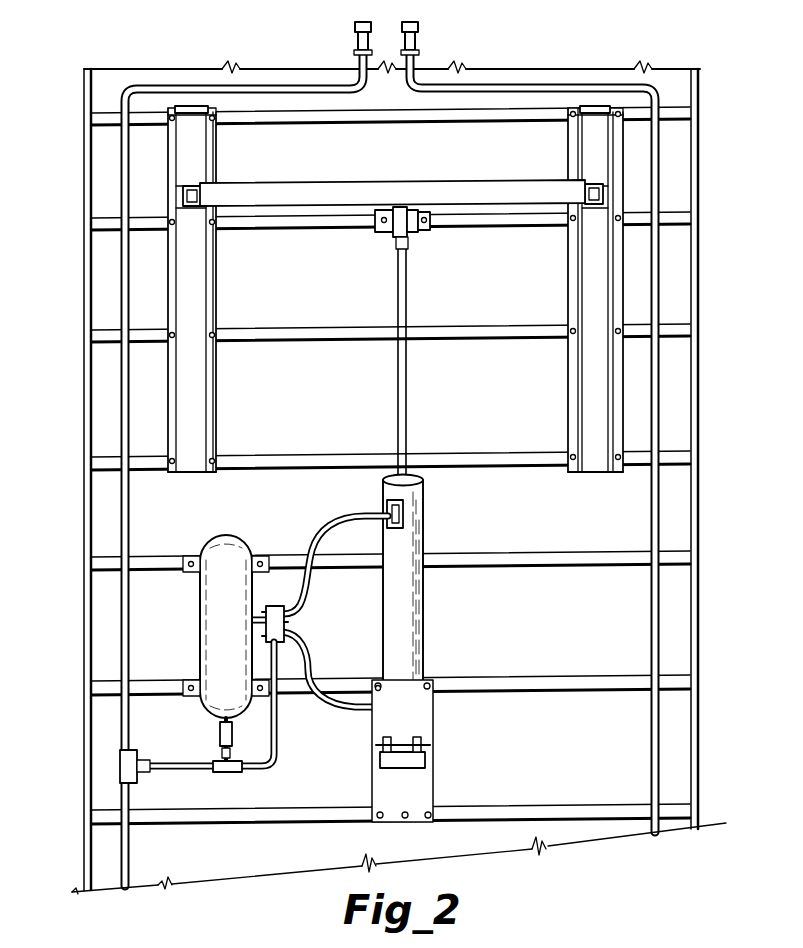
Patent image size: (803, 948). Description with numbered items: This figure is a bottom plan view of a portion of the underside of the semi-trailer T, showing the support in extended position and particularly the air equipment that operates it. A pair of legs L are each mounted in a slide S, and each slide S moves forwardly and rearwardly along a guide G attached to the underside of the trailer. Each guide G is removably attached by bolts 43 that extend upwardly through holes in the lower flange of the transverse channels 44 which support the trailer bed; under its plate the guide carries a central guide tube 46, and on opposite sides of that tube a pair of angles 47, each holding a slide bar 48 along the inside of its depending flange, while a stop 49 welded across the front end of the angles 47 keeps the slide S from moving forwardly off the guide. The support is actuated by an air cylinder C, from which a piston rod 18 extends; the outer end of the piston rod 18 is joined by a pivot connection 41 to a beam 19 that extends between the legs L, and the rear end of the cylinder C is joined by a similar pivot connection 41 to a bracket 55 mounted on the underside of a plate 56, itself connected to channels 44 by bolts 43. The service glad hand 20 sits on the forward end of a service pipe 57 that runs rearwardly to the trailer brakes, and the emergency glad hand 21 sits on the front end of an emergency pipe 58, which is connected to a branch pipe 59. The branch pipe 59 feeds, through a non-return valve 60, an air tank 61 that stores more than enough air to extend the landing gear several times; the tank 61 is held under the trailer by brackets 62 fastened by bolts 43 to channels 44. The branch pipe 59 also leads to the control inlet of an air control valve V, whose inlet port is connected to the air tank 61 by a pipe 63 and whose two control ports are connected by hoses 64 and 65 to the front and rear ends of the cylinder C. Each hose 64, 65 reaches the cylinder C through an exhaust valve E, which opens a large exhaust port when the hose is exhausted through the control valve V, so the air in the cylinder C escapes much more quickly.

The piston rod 18 is at (416, 299).
The beam 19 is at (300, 182).
The service glad hand 20 is at (416, 38).
The emergency glad hand 21 is at (356, 38).
The pivot connection 41 is at (386, 236).
The bolts 43 is at (168, 124).
The transverse channels 44 is at (478, 122).
The central guide tube 46 is at (196, 473).
The angles 47 is at (172, 476).
The slide bar 48 is at (174, 473).
The stop 49 is at (222, 112).
The bracket 55 is at (426, 756).
The plate 56 is at (434, 782).
The service pipe 57 is at (660, 282).
The emergency pipe 58 is at (120, 290).
The branch pipe 59 is at (200, 772).
The non-return valve 60 is at (220, 736).
The air tank 61 is at (216, 598).
The brackets 62 is at (190, 555).
The pipe 63 is at (276, 604).
The hose 64 is at (364, 508).
The hose 65 is at (350, 650).
The air cylinder C is at (432, 627).
The exhaust valve E is at (404, 512).
The guide G is at (388, 285).
The legs L is at (202, 186).
The slide S is at (200, 240).
The semi-trailer T is at (704, 686).
The air control valve V is at (282, 620).